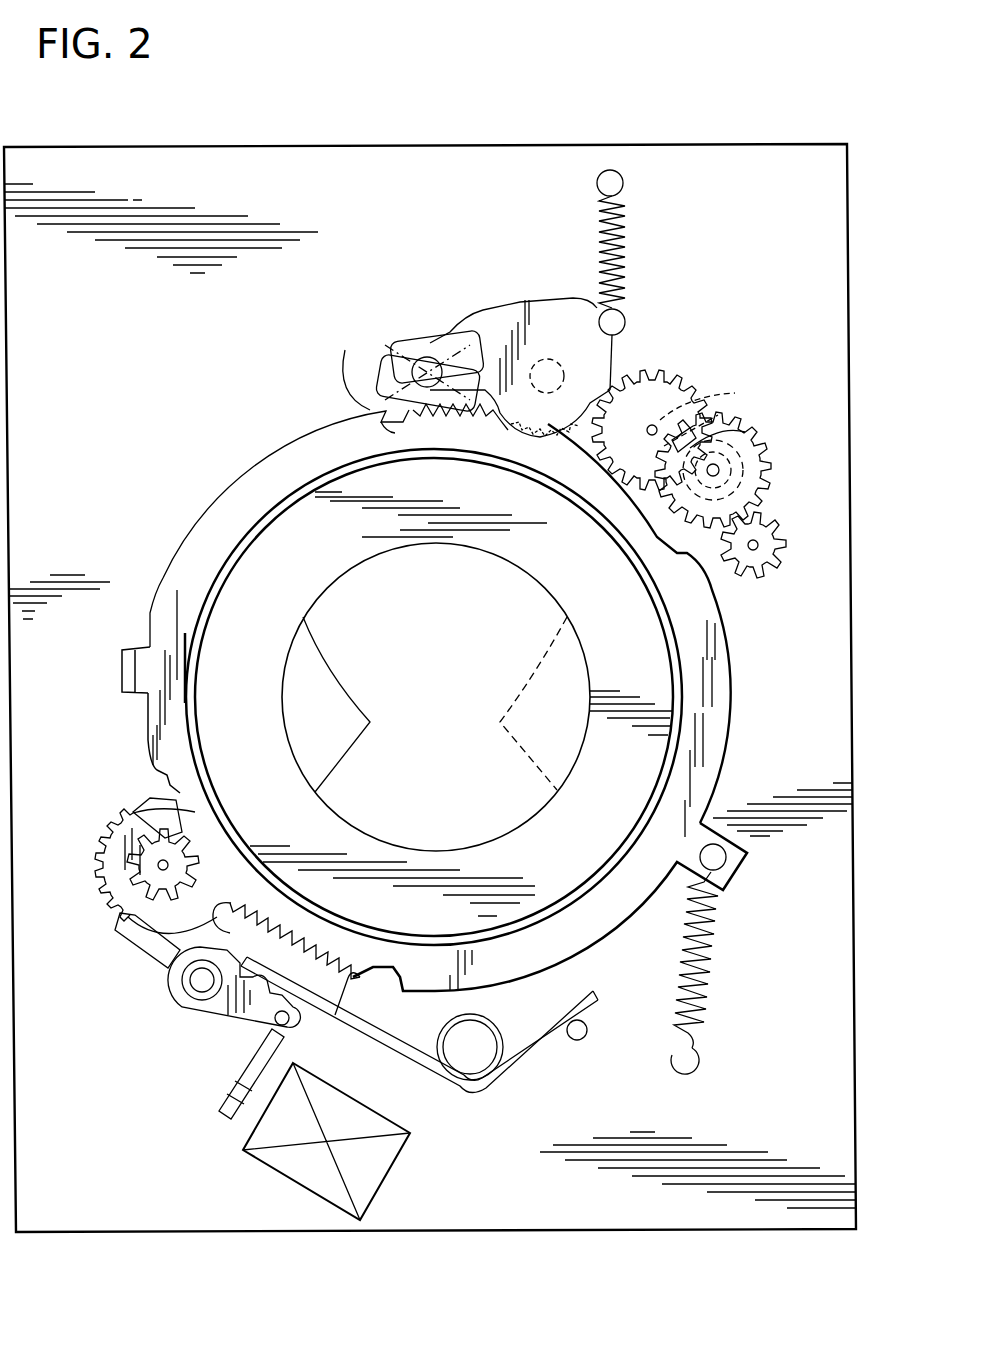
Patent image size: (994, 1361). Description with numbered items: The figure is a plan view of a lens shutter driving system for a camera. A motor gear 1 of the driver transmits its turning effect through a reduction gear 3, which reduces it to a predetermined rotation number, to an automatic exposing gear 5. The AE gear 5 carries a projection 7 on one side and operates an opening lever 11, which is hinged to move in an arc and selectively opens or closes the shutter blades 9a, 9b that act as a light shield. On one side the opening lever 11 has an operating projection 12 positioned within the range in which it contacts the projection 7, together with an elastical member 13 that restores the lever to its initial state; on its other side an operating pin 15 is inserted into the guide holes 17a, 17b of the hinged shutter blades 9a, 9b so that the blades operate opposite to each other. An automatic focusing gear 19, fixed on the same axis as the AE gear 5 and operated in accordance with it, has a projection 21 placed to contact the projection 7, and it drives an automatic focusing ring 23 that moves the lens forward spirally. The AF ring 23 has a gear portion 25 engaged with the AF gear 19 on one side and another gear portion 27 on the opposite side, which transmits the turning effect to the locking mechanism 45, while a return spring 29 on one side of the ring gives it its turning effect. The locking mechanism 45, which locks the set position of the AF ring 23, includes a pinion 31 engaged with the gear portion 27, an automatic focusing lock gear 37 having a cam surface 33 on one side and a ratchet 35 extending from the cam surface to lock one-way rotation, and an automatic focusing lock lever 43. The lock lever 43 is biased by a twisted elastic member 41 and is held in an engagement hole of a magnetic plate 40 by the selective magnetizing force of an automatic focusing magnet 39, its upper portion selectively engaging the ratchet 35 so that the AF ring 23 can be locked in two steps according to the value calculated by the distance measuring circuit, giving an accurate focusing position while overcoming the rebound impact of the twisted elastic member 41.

The motor gear 1 is at (780, 548).
The reduction gear 3 is at (762, 472).
The automatic exposing (AE) gear 5 is at (685, 393).
The automatic focusing (AF) gear 19 is at (652, 430).
The projection 7 is at (710, 420).
The shutter blade 9a is at (370, 595).
The shutter blade 9b is at (435, 704).
The opening lever 11 is at (518, 307).
The operating projection 12 is at (664, 385).
The elastical member 13 is at (628, 246).
The operating pin 15 is at (428, 360).
The guide hole 17a is at (395, 350).
The guide hole 17b is at (378, 382).
The projection 21 is at (745, 432).
The automatic focusing ring 23 is at (708, 697).
The gear portion 25 is at (384, 414).
The gear portion 27 is at (338, 1013).
The return spring 29 is at (713, 958).
The pinion 31 is at (136, 812).
The cam surface 33 is at (140, 965).
The ratchet 35 is at (96, 870).
The automatic focusing lock gear 37 is at (104, 840).
The automatic focusing magnet 39 is at (385, 1173).
The magnetic plate 40 is at (224, 1118).
The twisted elastic member 41 is at (540, 1052).
The automatic focusing lock lever 43 is at (210, 1010).
The locking mechanism 45 is at (399, 160).